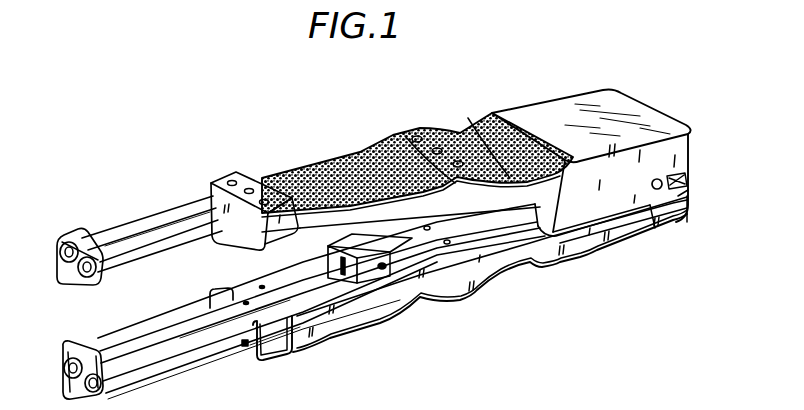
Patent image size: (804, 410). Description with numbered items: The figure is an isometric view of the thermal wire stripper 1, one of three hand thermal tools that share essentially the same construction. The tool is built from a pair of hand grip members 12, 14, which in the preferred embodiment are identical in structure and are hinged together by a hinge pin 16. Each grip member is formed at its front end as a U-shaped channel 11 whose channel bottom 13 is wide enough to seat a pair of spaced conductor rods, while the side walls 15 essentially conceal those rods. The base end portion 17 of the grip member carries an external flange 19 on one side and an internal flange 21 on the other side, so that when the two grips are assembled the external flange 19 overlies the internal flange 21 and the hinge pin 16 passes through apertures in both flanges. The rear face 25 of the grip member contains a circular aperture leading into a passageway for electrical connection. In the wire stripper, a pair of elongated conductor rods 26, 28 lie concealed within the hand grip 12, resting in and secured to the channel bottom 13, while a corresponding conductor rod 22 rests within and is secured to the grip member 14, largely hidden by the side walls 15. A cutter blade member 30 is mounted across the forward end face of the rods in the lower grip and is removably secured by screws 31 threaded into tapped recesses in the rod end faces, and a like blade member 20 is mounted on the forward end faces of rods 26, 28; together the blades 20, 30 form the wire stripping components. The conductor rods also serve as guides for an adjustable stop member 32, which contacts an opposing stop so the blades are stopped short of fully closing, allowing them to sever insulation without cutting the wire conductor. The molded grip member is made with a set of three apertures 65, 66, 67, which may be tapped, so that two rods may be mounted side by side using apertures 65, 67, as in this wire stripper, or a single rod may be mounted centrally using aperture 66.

The thermal wire stripper 1 is at (532, 279).
The U-shaped channel 11 is at (250, 238).
The hand grip member 12 is at (346, 166).
The channel bottom 13 is at (246, 344).
The hand grip member 14 is at (326, 326).
The side walls 15 is at (297, 231).
The hinge pin 16 is at (661, 181).
The base end portion 17 is at (583, 110).
The external flange 19 is at (633, 210).
The blade member 20 is at (56, 263).
The internal flange 21 is at (590, 223).
The conductor rod 22 is at (141, 343).
The rear face 25 is at (692, 190).
The conductor rod 26 is at (121, 232).
The conductor rod 28 is at (153, 247).
The cutter blade member 30 is at (73, 343).
The screws 31 is at (70, 378).
The adjustable stop member 32 is at (380, 228).
The aperture 65 is at (230, 185).
The aperture 66 is at (248, 190).
The aperture 67 is at (264, 200).